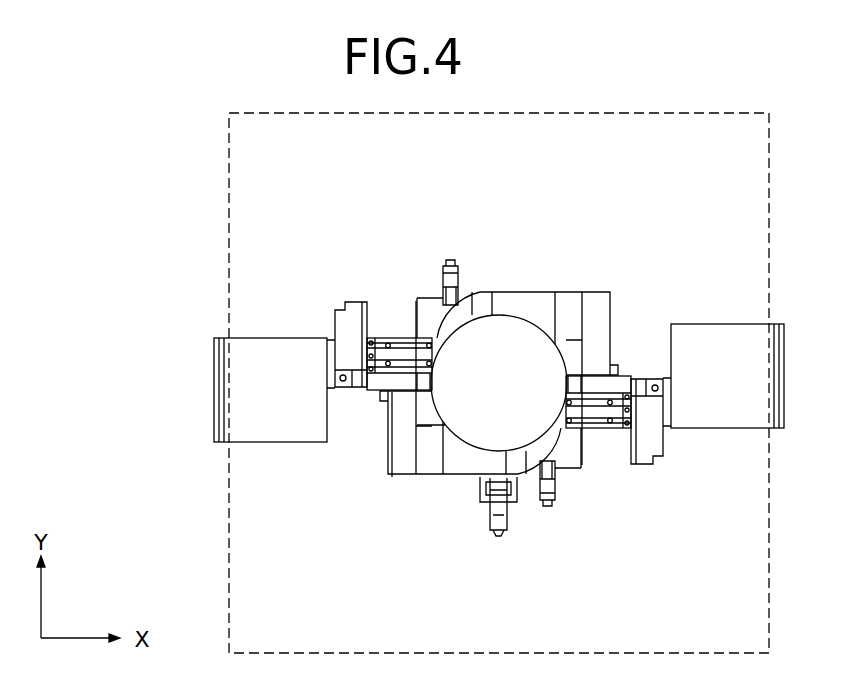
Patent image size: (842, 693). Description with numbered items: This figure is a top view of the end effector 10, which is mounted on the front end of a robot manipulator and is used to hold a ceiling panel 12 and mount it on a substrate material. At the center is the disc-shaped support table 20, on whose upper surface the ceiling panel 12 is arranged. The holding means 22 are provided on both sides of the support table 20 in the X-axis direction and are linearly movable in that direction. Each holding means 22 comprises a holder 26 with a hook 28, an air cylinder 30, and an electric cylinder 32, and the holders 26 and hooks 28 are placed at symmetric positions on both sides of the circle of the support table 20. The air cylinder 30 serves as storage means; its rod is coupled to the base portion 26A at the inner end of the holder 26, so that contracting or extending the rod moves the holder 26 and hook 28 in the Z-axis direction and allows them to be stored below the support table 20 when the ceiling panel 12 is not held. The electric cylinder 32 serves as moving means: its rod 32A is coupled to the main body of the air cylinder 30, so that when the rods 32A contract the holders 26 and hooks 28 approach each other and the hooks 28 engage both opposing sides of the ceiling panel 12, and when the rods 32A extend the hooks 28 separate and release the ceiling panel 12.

The end effector 10 is at (664, 538).
The ceiling panel 12 is at (262, 540).
The support table 20 is at (482, 353).
The holding means 22 is at (140, 340).
The holder 26 is at (258, 406).
The base portion 26A is at (332, 340).
The hook 28 is at (214, 357).
The air cylinder 30 is at (498, 387).
The electric cylinder 32 is at (552, 312).
The rod 32A is at (402, 356).